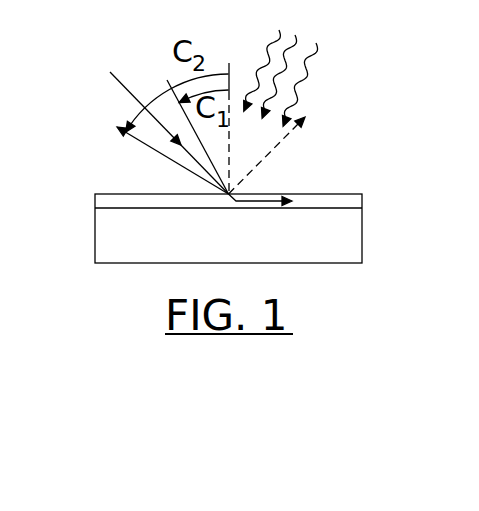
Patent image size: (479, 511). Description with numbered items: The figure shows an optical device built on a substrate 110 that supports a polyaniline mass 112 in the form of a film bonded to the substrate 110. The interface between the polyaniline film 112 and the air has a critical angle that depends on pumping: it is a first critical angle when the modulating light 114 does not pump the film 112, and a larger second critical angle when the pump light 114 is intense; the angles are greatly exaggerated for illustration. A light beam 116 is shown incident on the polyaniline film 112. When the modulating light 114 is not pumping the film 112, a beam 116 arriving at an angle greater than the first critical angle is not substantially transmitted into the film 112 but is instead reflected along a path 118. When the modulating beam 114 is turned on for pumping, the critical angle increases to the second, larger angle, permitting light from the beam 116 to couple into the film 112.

The substrate 110 is at (342, 247).
The polyaniline film 112 is at (320, 202).
The modulating light 114 is at (270, 16).
The light beam 116 is at (124, 92).
The path 118 is at (296, 147).